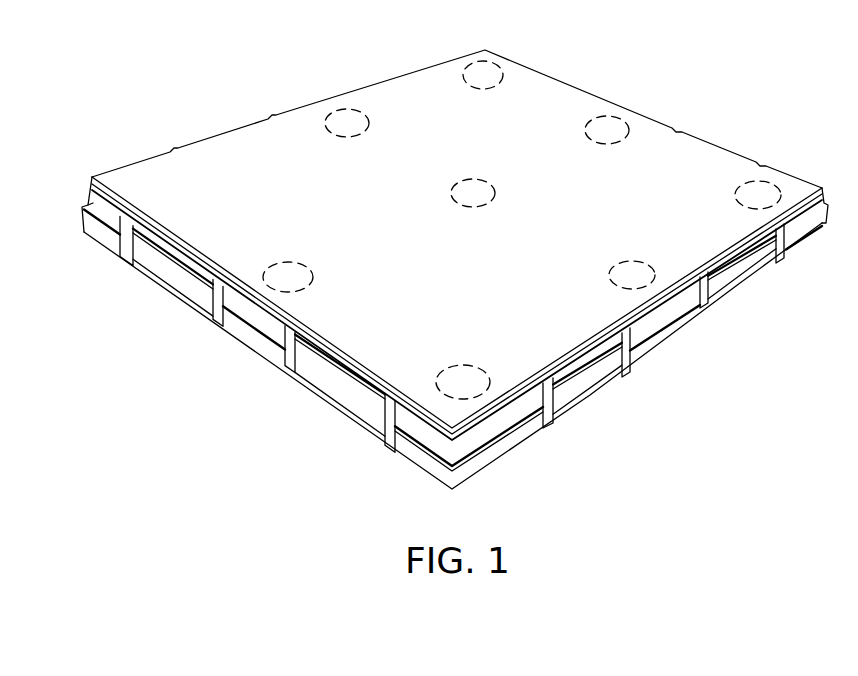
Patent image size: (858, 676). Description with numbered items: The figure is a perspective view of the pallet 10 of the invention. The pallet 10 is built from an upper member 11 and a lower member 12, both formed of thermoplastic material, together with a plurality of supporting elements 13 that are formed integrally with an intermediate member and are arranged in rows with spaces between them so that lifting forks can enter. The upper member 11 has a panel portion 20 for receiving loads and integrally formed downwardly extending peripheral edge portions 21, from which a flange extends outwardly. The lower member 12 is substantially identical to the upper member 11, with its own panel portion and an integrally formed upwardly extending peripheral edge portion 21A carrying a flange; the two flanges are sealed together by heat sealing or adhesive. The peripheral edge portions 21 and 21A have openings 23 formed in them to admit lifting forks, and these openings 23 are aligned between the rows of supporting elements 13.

The pallet 10 is at (648, 113).
The upper member 11 is at (92, 177).
The lower member 12 is at (84, 232).
The supporting elements 13 is at (590, 128).
The panel portion 20 is at (326, 203).
The peripheral edge portions 21 is at (241, 306).
The peripheral edge portion 21A is at (242, 336).
The openings 23 is at (172, 268).